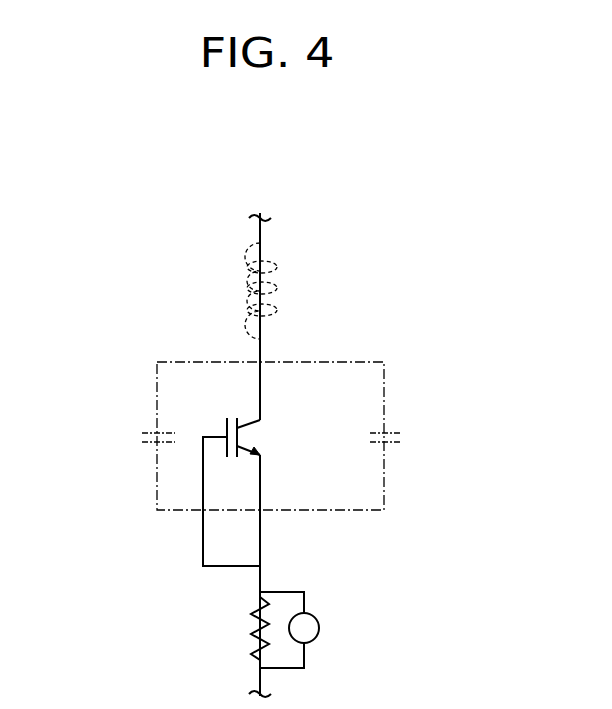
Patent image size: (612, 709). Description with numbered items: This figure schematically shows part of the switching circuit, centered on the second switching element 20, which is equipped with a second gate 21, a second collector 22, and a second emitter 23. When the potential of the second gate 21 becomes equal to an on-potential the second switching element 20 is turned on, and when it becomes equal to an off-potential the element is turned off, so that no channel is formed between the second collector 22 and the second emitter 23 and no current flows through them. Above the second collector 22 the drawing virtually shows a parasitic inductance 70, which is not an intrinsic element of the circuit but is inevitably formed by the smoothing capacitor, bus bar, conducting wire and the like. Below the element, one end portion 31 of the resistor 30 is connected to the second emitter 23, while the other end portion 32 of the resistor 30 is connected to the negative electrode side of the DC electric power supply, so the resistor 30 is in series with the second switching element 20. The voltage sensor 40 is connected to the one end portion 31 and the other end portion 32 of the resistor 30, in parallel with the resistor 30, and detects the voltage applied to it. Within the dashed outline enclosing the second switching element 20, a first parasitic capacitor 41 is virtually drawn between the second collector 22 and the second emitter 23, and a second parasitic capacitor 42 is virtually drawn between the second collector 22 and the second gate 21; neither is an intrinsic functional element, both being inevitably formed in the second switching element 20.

The parasitic inductance 70 is at (237, 261).
The second switching element 20 is at (264, 436).
The second gate 21 is at (217, 437).
The second collector 22 is at (262, 397).
The second emitter 23 is at (262, 476).
The second parasitic capacitor 42 is at (135, 437).
The first parasitic capacitor 41 is at (405, 437).
The resistor 30 is at (251, 625).
The one end portion 31 is at (258, 594).
The other end portion 32 is at (258, 663).
The voltage sensor 40 is at (319, 629).